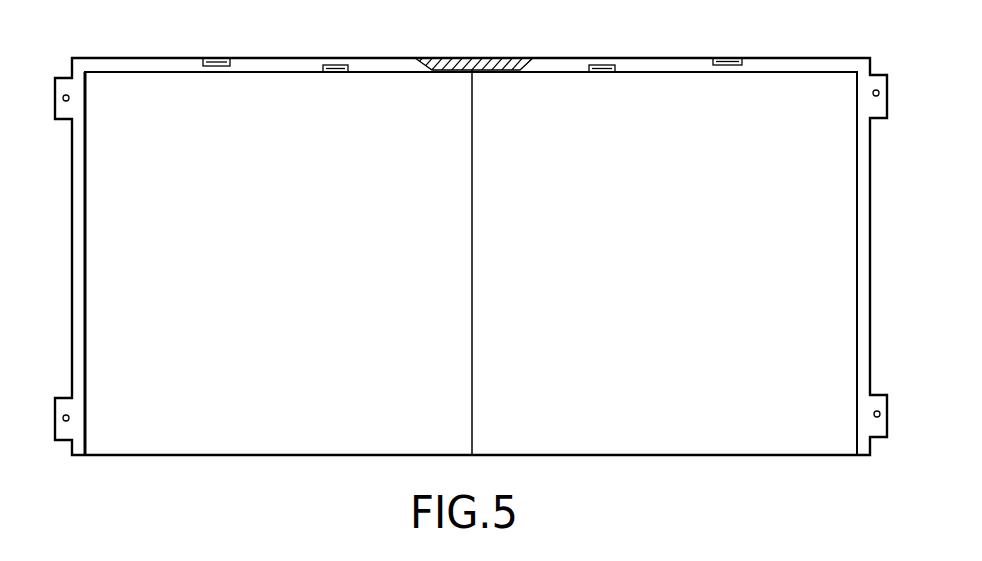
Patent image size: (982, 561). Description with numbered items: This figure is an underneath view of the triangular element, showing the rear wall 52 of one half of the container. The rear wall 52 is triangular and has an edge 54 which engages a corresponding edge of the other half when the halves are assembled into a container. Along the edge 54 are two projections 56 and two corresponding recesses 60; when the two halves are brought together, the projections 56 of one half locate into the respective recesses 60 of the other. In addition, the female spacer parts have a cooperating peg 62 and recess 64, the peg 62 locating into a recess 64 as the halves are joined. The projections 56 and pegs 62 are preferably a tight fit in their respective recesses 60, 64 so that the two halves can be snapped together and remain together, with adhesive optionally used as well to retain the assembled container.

The rear wall 52 is at (583, 57).
The edge 54 is at (392, 65).
The projections 56 is at (336, 72).
The recesses 60 is at (612, 72).
The peg 62 is at (69, 101).
The recess 64 is at (874, 96).